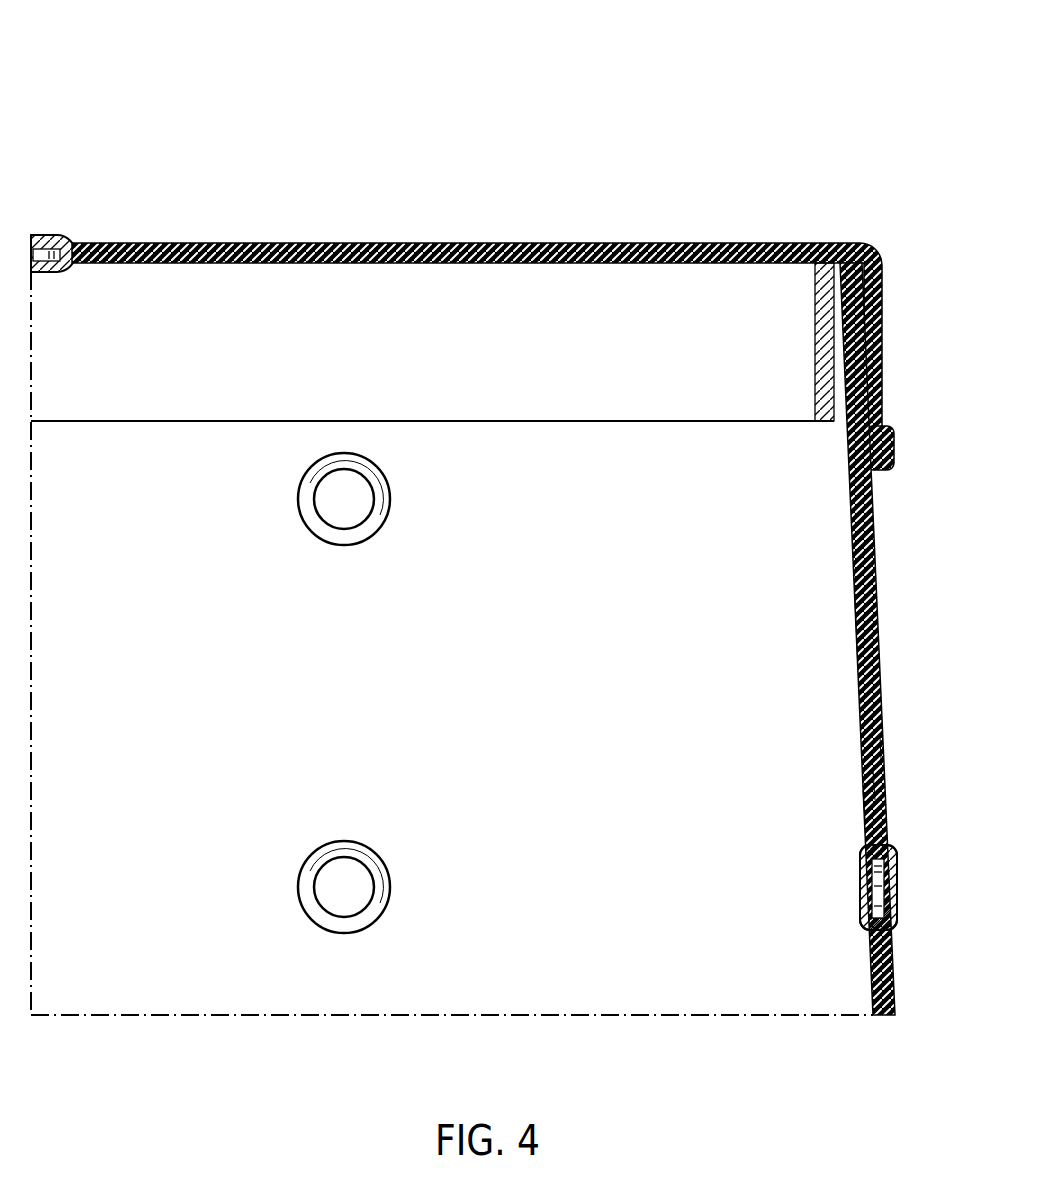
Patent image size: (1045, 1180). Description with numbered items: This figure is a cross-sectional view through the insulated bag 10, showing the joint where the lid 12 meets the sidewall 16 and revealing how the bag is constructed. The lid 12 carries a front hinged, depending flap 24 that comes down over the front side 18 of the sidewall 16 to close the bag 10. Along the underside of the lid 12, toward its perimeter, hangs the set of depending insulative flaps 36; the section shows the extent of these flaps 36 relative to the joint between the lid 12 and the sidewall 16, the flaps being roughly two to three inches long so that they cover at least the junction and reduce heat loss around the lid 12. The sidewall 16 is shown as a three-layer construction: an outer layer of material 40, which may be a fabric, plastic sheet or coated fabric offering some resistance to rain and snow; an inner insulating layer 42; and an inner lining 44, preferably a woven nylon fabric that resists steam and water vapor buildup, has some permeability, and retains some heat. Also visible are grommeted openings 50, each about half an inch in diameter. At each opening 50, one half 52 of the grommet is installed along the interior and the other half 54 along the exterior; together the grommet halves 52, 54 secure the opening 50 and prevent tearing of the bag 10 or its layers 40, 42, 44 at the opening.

The insulated bag 10 is at (196, 145).
The lid 12 is at (698, 232).
The sidewall 16 is at (892, 703).
The front side 18 is at (880, 660).
The front flap 24 is at (887, 337).
The set of depending insulative flaps 36 is at (710, 405).
The outer layer of material 40 is at (882, 745).
The inner insulating layer 42 is at (882, 787).
The inner lining 44 is at (864, 806).
The opening 50 is at (332, 512).
The grommet half 52 is at (861, 892).
The grommet half 54 is at (892, 870).